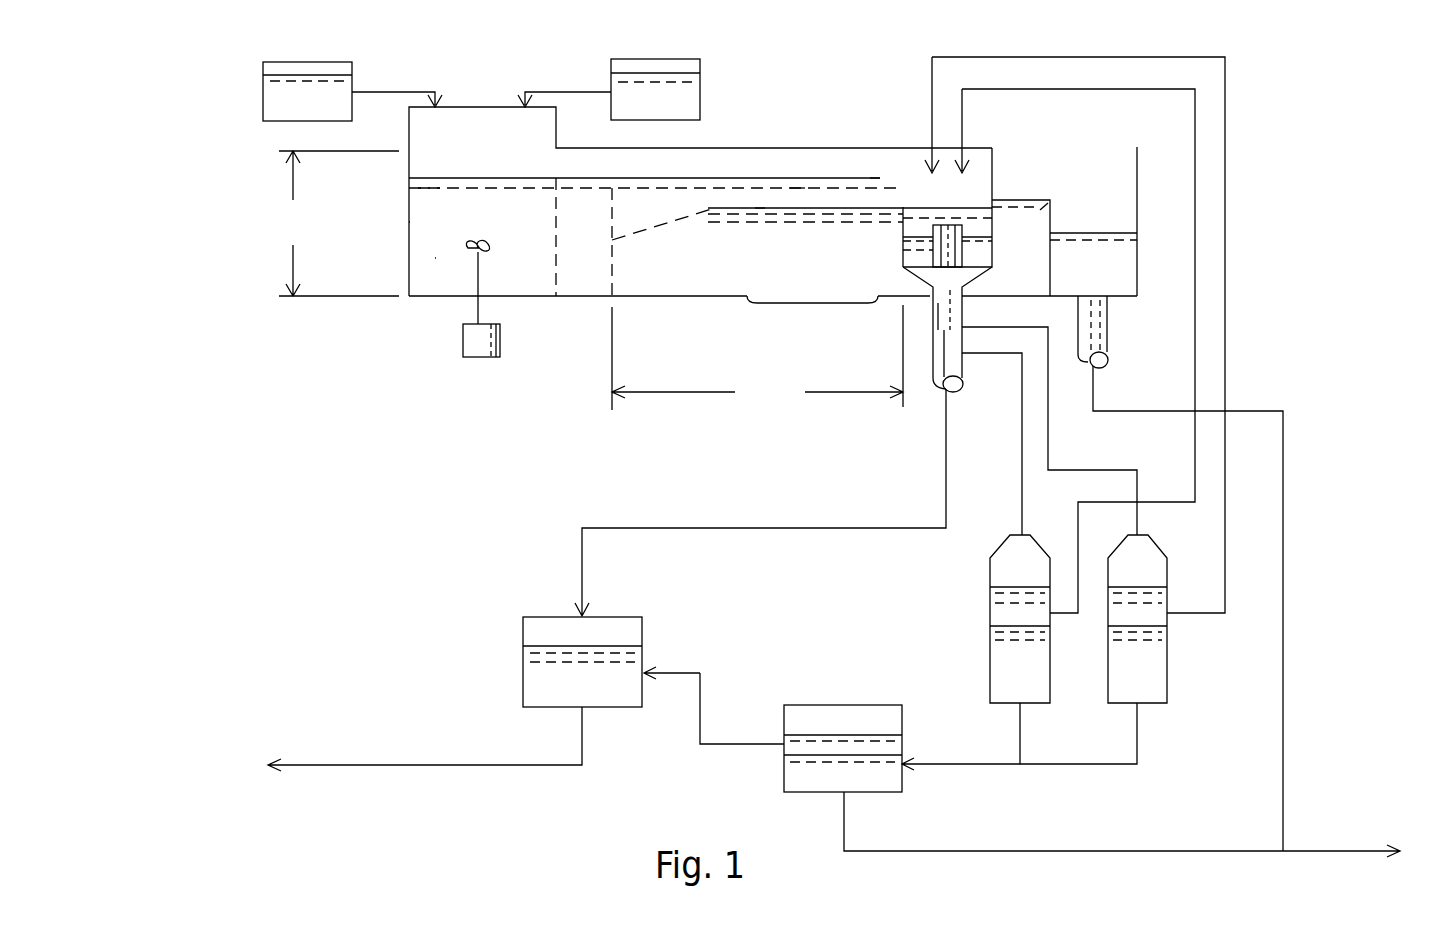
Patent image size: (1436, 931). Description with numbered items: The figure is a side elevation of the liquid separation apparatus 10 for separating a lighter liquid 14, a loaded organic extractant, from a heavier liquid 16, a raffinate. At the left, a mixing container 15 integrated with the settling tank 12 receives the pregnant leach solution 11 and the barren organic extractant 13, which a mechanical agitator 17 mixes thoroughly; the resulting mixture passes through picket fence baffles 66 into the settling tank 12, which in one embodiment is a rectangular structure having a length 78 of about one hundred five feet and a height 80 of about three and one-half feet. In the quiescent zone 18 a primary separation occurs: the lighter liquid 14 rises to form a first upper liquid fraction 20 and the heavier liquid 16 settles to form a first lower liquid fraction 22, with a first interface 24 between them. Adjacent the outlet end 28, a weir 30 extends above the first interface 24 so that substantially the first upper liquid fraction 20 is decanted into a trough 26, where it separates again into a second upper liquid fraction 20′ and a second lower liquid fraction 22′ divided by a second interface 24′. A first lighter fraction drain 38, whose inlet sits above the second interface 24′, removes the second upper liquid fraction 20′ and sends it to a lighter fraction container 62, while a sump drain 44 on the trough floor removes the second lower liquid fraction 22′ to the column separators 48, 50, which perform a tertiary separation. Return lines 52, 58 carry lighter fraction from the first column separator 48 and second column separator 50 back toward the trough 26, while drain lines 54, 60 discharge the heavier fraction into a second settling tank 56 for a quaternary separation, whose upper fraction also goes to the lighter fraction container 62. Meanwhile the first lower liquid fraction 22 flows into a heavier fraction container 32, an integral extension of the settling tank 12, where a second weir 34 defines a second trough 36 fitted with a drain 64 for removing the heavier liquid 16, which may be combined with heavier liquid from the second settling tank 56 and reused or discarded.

The liquid separation apparatus 10 is at (216, 44).
The pregnant leach solution 11 is at (263, 103).
The settling tank 12 is at (710, 128).
The barren organic extractant 13 is at (685, 100).
The lighter liquid 14 is at (409, 194).
The mixing container 15 is at (408, 224).
The heavier liquid 16 is at (435, 258).
The mechanical mixer or agitator 17 is at (463, 336).
The quiescent zone 18 is at (810, 304).
The first upper liquid fraction 20 is at (805, 189).
The second upper liquid fraction 20′ is at (903, 226).
The first lower liquid fraction 22 is at (628, 267).
The second lower liquid fraction 22′ is at (905, 258).
The first interface 24 is at (760, 207).
The second interface 24′ is at (975, 233).
The trough 26 is at (1020, 120).
The outlet end 28 is at (877, 176).
The weir 30 is at (915, 183).
The heavier fraction container or tank 32 is at (1163, 247).
The second weir 34 is at (1072, 203).
The second trough 36 is at (1127, 117).
The first lighter fraction drain 38 is at (958, 226).
The sump drain 44 is at (975, 277).
The first column separator 48 is at (990, 558).
The second column separator 50 is at (1145, 541).
The lighter fraction return line 52 is at (1078, 513).
The drain line 54 is at (1020, 736).
The second settling tank 56 is at (858, 705).
The lighter fraction return line 58 is at (1229, 536).
The drain line 60 is at (1165, 755).
The lighter fraction container 62 is at (523, 622).
The drain 64 is at (1107, 331).
The picket fence baffles 66 is at (609, 150).
The length 78 is at (757, 357).
The height 80 is at (335, 223).